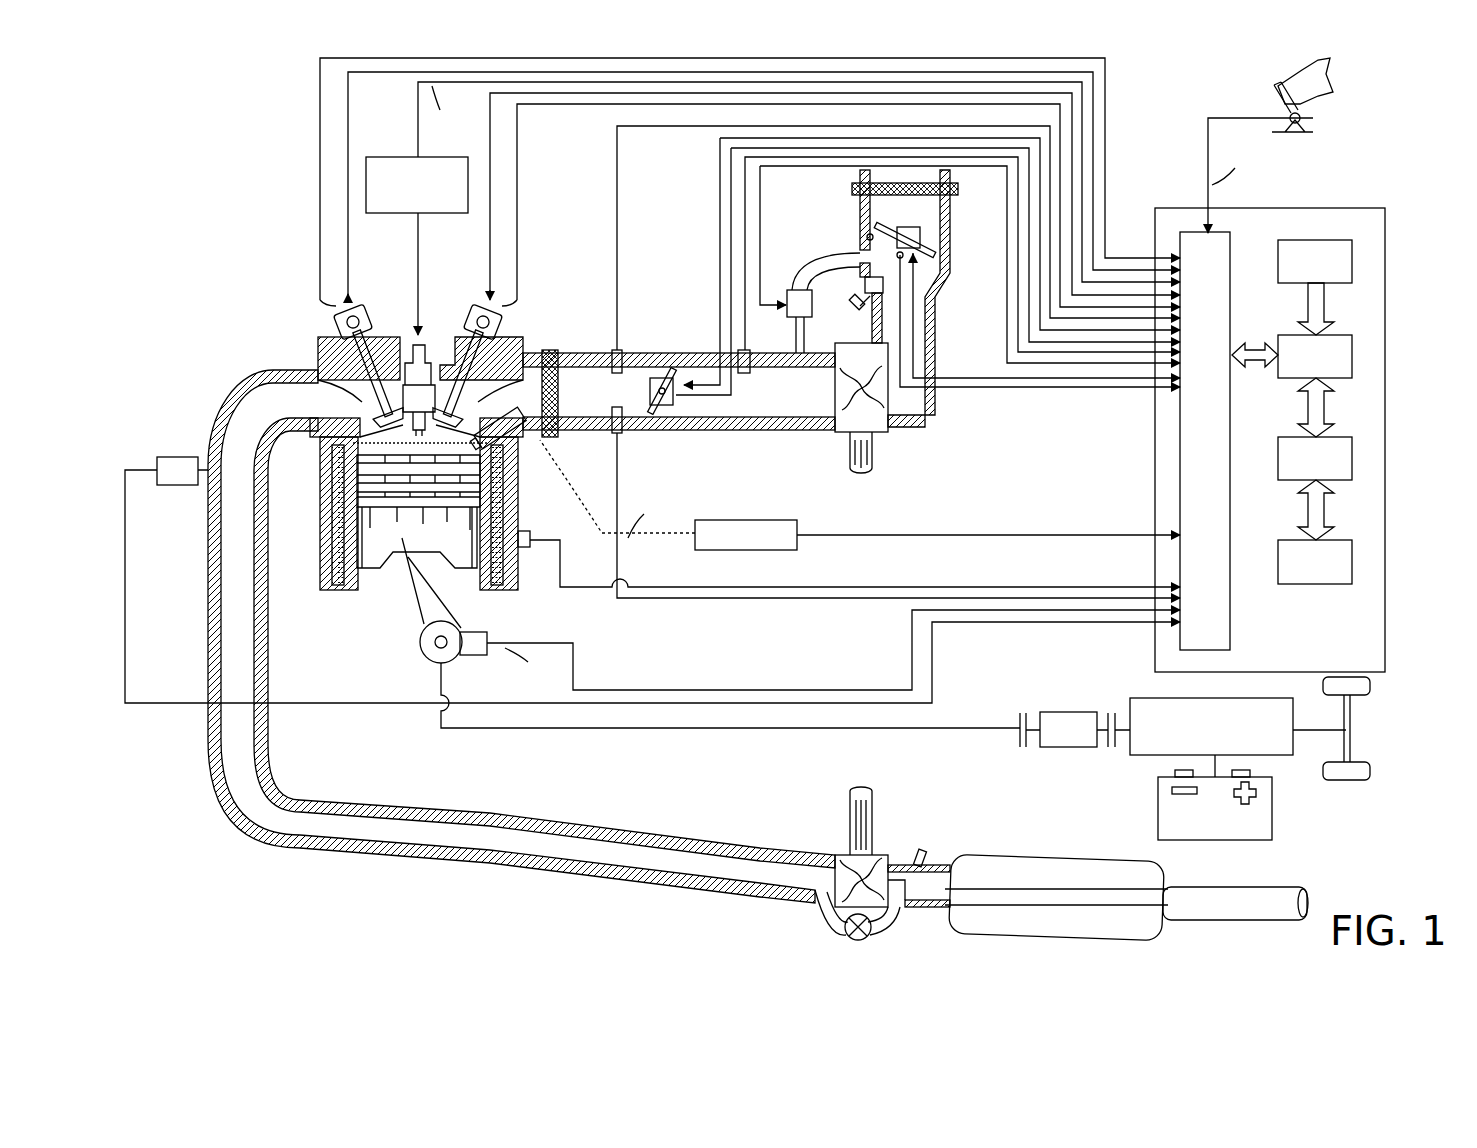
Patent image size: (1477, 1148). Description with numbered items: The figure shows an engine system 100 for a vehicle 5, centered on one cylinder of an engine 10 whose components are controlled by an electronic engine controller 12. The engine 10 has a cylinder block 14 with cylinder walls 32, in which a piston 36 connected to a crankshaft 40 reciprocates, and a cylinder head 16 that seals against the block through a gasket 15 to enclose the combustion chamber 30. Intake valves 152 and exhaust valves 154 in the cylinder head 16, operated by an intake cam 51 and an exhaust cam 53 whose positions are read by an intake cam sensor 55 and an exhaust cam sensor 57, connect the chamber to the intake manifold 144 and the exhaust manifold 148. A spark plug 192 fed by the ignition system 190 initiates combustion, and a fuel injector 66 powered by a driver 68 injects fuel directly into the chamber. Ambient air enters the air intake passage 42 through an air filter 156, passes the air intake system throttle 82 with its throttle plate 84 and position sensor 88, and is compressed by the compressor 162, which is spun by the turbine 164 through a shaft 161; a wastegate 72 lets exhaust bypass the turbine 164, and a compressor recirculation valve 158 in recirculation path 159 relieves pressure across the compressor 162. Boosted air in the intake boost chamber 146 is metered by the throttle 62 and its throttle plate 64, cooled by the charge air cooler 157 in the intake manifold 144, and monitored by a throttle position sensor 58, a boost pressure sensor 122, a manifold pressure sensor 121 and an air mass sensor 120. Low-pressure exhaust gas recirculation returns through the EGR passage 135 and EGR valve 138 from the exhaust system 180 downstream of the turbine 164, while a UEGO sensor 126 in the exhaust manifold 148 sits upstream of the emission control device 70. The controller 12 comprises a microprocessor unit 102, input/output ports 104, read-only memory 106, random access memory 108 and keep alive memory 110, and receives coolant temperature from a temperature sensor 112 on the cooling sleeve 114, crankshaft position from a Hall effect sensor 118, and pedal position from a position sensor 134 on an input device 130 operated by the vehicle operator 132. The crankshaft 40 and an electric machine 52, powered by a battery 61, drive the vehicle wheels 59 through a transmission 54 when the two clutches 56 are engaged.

The engine system 100 is at (172, 118).
The engine 10 is at (246, 270).
The electronic engine controller 12 is at (1385, 210).
The cylinder block 14 is at (318, 490).
The gasket 15 is at (325, 448).
The cylinder head 16 is at (538, 340).
The combustion chamber 30 is at (417, 440).
The cylinder walls 32 is at (357, 595).
The piston 36 is at (400, 575).
The crankshaft 40 is at (430, 660).
The air intake passage 42 is at (921, 223).
The intake cam 51 is at (475, 312).
The electric machine 52 is at (1066, 747).
The exhaust cam 53 is at (362, 312).
The transmission 54 is at (1270, 755).
The intake cam sensor 55 is at (498, 314).
The clutch 56 is at (1020, 716).
The exhaust cam sensor 57 is at (336, 312).
The throttle position sensor 58 is at (680, 412).
The vehicle wheels 59 is at (1348, 780).
The vehicle 5 is at (1396, 715).
The battery 61 is at (1210, 840).
The throttle 62 is at (660, 378).
The throttle plate 64 is at (672, 375).
The fuel injector 66 is at (520, 442).
The driver 68 is at (780, 520).
The emission control device 70 is at (950, 915).
The wastegate 72 is at (845, 930).
The air intake system throttle 82 is at (870, 236).
The throttle plate 84 is at (875, 228).
The position sensor 88 is at (866, 238).
The microprocessor unit 102 is at (1352, 356).
The input/output ports 104 is at (1232, 235).
The read-only memory 106 is at (1352, 264).
The random access memory 108 is at (1352, 458).
The keep alive memory 110 is at (1352, 562).
The temperature sensor 112 is at (528, 531).
The cooling sleeve 114 is at (510, 580).
The Hall effect sensor 118 is at (473, 655).
The air mass sensor 120 is at (622, 433).
The pressure sensor 121 is at (620, 350).
The pressure sensor 122 is at (750, 360).
The UEGO sensor 126 is at (157, 462).
The input device 130 is at (1280, 100).
The vehicle operator 132 is at (1325, 76).
The position sensor 134 is at (1310, 118).
The EGR passage 135 is at (862, 304).
The EGR valve 138 is at (865, 285).
The intake manifold 144 is at (612, 407).
The intake boost chamber 146 is at (777, 407).
The exhaust manifold 148 is at (306, 412).
The intake valves 152 is at (470, 414).
The exhaust valves 154 is at (345, 396).
The air filter 156 is at (958, 189).
The charge air cooler 157 is at (558, 437).
The compressor recirculation valve 158 is at (780, 290).
The compressor recirculation path 159 is at (806, 340).
The shaft 161 is at (872, 462).
The compressor 162 is at (888, 432).
The turbine 164 is at (838, 855).
The exhaust system 180 is at (468, 880).
The ignition system 190 is at (404, 158).
The spark plug 192 is at (432, 340).